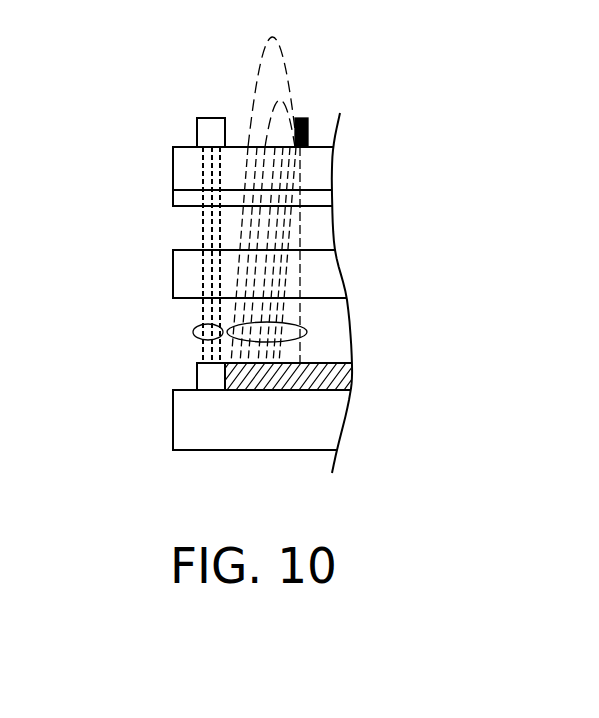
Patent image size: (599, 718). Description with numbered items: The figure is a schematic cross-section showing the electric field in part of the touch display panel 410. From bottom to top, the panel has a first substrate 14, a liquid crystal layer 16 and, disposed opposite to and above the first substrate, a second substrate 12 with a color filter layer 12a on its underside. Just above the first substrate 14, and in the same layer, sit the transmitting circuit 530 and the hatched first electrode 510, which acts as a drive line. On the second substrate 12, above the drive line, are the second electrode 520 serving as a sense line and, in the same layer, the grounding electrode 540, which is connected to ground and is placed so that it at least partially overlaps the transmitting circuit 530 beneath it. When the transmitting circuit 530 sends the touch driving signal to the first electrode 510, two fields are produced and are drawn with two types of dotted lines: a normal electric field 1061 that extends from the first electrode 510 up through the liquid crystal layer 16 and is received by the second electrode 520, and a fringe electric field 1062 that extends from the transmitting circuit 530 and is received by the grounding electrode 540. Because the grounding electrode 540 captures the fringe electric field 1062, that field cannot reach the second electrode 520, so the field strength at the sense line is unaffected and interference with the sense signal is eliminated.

The second substrate 12 is at (180, 168).
The color filter layer 12a is at (180, 197).
The first substrate 14 is at (185, 428).
The liquid crystal layer 16 is at (185, 273).
The touch display panel 410 is at (457, 483).
The first electrode 510 is at (348, 377).
The second electrode 520 is at (308, 120).
The transmitting circuit 530 is at (197, 373).
The grounding electrode 540 is at (197, 130).
The normal electric field 1061 is at (307, 330).
The fringe electric field 1062 is at (193, 331).